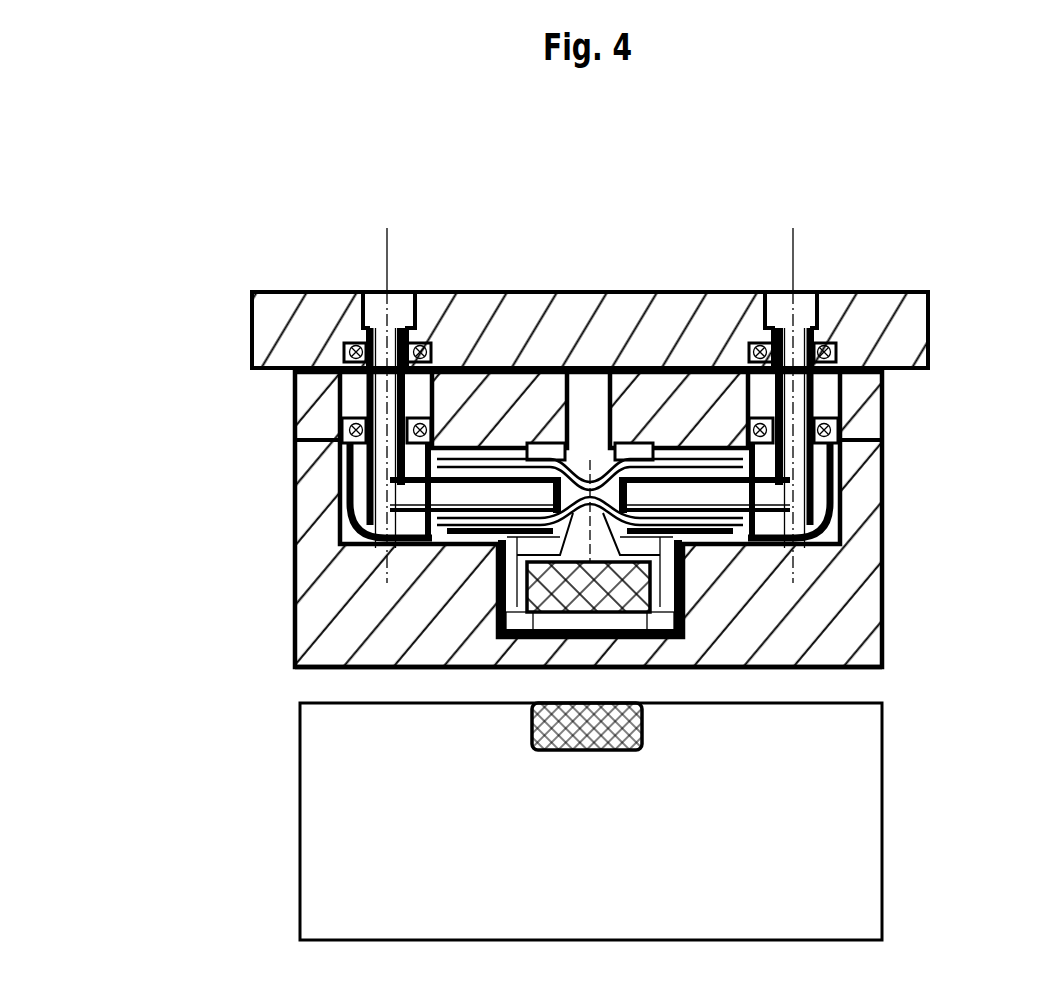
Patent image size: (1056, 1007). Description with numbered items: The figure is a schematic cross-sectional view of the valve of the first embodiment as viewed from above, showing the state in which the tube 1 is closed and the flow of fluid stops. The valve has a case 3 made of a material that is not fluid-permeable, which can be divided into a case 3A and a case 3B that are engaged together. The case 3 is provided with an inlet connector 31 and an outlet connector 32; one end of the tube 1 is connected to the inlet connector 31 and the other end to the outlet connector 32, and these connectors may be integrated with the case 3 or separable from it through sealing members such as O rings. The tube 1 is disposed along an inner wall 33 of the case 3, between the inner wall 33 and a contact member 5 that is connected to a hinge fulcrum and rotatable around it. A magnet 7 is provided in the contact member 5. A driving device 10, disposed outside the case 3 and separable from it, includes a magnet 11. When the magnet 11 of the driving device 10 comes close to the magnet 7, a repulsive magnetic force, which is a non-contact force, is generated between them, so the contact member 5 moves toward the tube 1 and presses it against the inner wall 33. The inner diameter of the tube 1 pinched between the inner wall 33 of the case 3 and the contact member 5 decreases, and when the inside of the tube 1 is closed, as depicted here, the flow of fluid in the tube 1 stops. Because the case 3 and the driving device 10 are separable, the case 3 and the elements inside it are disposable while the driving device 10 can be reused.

The tube 1 is at (600, 470).
The case 3 is at (906, 605).
The case 3A is at (865, 430).
The case 3B is at (773, 640).
The contact member 5 is at (517, 578).
The magnet 7 is at (533, 617).
The driving device 10 is at (883, 790).
The magnet 11 is at (600, 750).
The inlet connector 31 is at (803, 398).
The outlet connector 32 is at (360, 375).
The inner wall 33 is at (577, 485).